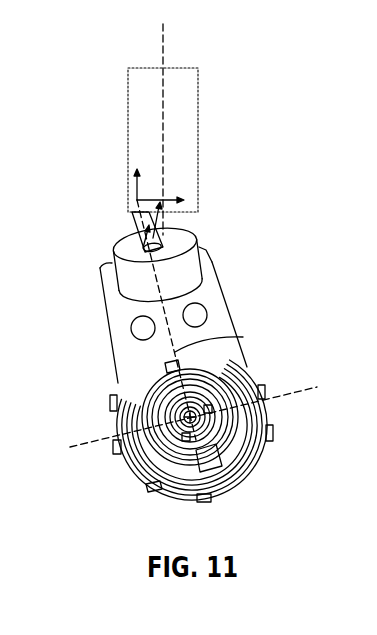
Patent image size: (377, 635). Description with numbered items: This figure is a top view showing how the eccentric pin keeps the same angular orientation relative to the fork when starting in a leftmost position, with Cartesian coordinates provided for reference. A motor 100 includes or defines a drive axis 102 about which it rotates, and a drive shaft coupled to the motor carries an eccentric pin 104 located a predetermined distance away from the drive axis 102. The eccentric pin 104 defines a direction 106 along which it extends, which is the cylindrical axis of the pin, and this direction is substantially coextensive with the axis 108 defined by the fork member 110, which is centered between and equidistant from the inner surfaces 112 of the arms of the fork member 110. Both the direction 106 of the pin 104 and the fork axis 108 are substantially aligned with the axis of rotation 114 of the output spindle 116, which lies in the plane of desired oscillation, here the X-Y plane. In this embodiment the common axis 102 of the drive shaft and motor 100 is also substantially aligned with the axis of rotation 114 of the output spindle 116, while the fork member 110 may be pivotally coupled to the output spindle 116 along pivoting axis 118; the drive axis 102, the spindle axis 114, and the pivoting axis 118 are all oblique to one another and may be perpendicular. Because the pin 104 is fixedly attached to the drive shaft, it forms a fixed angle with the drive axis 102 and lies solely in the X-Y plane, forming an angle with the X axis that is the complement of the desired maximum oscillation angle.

The motor 100 is at (198, 153).
The drive axis 102 is at (162, 90).
The eccentric pin 104 is at (134, 230).
The direction 106 is at (138, 233).
The axis 108 is at (243, 338).
The fork member 110 is at (222, 320).
The inner surfaces 112 is at (210, 245).
The axis of rotation 114 is at (193, 418).
The output spindle 116 is at (202, 407).
The axis 118 is at (290, 394).